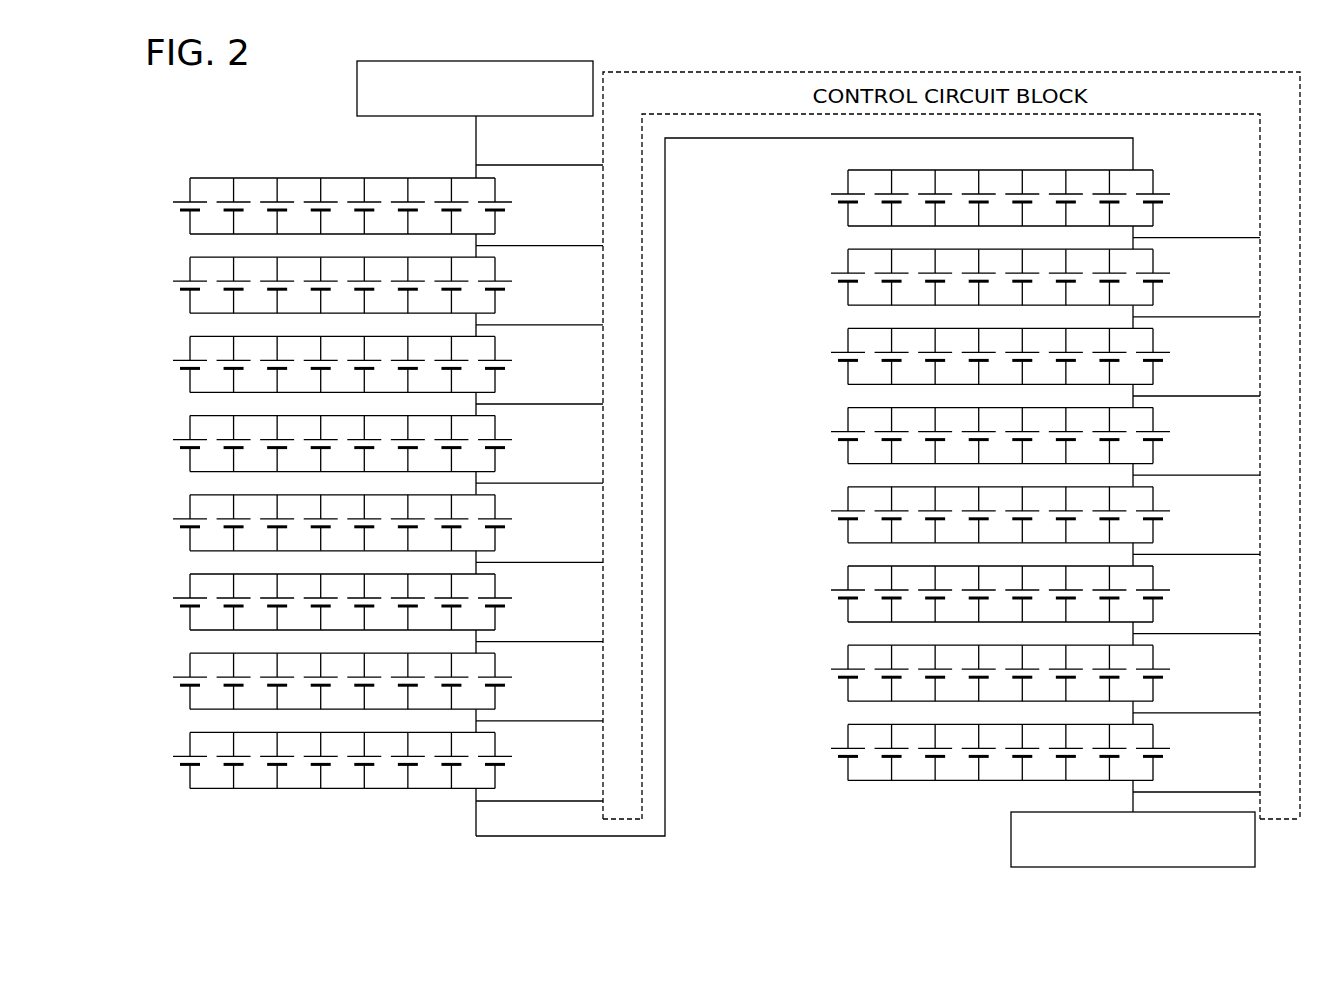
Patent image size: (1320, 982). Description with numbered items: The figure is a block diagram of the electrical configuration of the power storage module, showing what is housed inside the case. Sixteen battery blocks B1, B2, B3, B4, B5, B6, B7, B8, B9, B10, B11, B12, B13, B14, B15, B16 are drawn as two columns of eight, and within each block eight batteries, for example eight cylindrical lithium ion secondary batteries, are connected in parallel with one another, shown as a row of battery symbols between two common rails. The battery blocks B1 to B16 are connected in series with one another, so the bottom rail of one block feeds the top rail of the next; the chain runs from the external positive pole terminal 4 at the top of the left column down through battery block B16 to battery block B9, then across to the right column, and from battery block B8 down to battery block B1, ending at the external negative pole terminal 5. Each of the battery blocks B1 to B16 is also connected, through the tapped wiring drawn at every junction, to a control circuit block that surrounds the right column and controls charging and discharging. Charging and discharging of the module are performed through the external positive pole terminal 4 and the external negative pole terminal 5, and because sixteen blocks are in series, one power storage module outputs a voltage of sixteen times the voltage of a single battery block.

The external positive pole terminal 4 is at (357, 84).
The external negative pole terminal 5 is at (1011, 838).
The battery block B1 is at (822, 726).
The battery block B2 is at (822, 647).
The battery block B3 is at (822, 568).
The battery block B4 is at (822, 489).
The battery block B5 is at (822, 410).
The battery block B6 is at (822, 330).
The battery block B7 is at (822, 251).
The battery block B8 is at (822, 172).
The battery block B9 is at (145, 734).
The battery block B10 is at (145, 655).
The battery block B11 is at (145, 576).
The battery block B12 is at (145, 497).
The battery block B13 is at (145, 418).
The battery block B14 is at (145, 338).
The battery block B15 is at (145, 259).
The battery block B16 is at (145, 180).